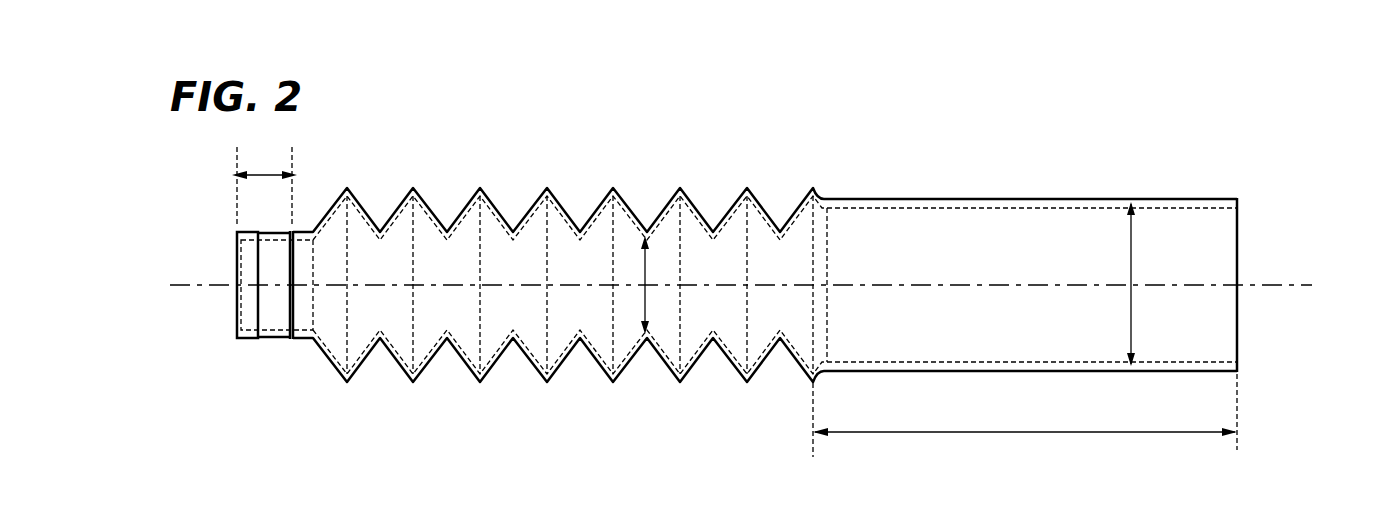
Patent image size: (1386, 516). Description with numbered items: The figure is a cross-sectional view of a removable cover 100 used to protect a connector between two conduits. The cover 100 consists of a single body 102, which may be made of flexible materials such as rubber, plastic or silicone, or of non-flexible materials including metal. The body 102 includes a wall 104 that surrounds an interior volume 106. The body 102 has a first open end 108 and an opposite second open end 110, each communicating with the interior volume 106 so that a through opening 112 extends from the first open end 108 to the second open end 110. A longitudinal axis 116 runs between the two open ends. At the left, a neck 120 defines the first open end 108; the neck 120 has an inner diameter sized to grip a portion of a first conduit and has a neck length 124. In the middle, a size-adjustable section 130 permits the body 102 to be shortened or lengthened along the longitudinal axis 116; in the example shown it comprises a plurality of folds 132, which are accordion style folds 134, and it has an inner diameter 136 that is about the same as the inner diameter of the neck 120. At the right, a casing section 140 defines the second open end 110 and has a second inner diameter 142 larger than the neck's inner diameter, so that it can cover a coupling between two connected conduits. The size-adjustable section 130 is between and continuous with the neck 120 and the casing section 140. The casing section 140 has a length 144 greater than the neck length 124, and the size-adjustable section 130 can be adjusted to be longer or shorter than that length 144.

The cover 100 is at (1141, 128).
The body 102 is at (995, 198).
The wall 104 is at (848, 198).
The interior volume 106 is at (1220, 232).
The first open end 108 is at (247, 233).
The second open end 110 is at (1212, 362).
The through opening 112 is at (228, 317).
The longitudinal axis 116 is at (1272, 285).
The neck 120 is at (247, 339).
The neck length 124 is at (267, 175).
The size-adjustable section 130 is at (492, 201).
The folds 132 is at (547, 383).
The accordion style folds 134 is at (447, 340).
The inner diameter 136 is at (648, 262).
The casing section 140 is at (958, 371).
The second inner diameter 142 is at (1131, 262).
The length 144 is at (1097, 433).